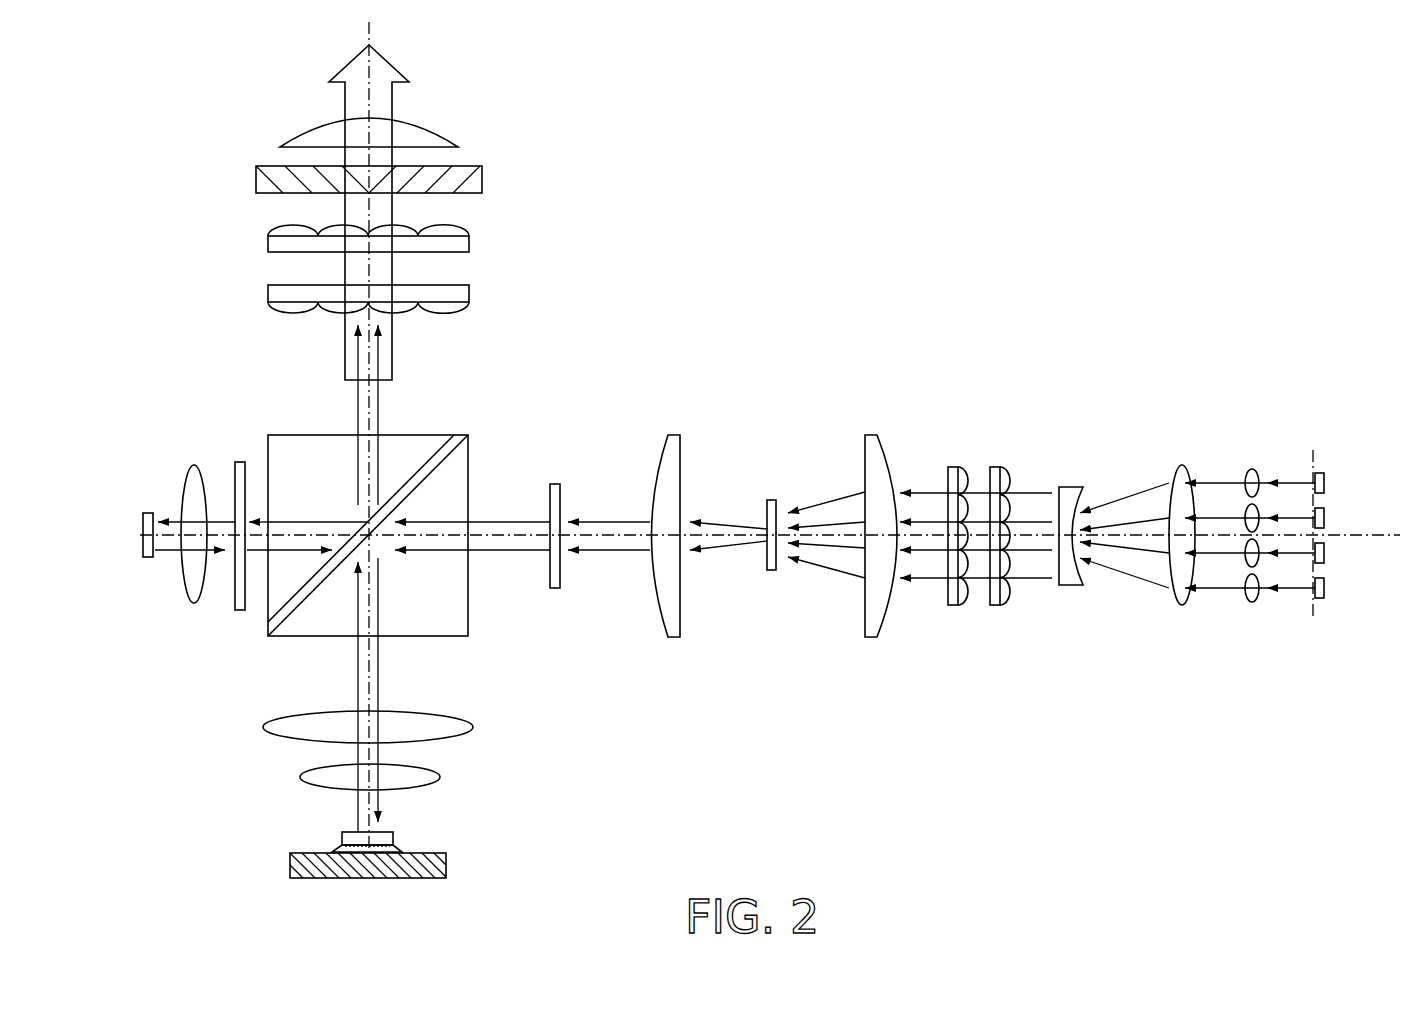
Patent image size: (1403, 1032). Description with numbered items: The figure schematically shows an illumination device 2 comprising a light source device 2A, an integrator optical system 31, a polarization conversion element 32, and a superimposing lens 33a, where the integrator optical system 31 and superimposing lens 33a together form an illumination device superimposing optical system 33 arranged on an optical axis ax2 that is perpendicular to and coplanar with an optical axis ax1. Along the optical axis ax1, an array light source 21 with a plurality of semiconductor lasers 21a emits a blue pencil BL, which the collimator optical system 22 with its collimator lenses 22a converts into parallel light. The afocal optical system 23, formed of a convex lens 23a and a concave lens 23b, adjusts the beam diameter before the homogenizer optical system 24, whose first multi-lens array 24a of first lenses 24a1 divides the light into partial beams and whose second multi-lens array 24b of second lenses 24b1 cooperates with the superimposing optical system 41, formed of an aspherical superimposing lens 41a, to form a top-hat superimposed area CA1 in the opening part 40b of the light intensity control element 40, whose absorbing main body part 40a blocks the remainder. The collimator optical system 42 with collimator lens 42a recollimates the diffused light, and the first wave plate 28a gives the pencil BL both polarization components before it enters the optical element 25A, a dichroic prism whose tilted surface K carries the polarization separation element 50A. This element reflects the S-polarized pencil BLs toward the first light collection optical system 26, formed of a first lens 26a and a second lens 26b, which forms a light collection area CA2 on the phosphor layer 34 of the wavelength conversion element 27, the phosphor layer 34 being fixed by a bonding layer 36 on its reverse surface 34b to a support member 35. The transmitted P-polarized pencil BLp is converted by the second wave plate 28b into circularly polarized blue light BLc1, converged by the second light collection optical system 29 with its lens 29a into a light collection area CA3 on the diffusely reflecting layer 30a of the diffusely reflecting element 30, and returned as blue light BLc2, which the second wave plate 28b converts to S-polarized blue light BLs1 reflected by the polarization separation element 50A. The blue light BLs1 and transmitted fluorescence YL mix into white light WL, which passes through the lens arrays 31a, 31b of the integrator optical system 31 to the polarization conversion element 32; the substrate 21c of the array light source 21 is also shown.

The illumination device 2 is at (923, 190).
The light source device 2A is at (527, 405).
The array light source 21 is at (1353, 539).
The semiconductor laser 21a is at (1325, 478).
The substrate 21c is at (1316, 615).
The collimator optical system 22 is at (1257, 480).
The collimator lens for laser 22a is at (1248, 468).
The afocal optical system 23 is at (1127, 472).
The convex lens 23a is at (1170, 493).
The concave lens 23b is at (1073, 477).
The homogenizer optical system 24 is at (994, 518).
The first multi-lens array 24a is at (1024, 539).
The first lens 24a1 is at (1012, 565).
The second multi-lens array 24b is at (958, 539).
The second lens 24b1 is at (970, 565).
The optical element 25A is at (404, 545).
The first light collection optical system 26 is at (444, 751).
The first lens 26a is at (473, 720).
The second lens 26b is at (440, 772).
The wavelength conversion element 27 is at (355, 853).
The first wave plate 28a is at (555, 484).
The second wave plate 28b is at (240, 460).
The second light collection optical system 29 is at (179, 542).
The lens 29a is at (186, 600).
The diffusely reflecting element 30 is at (135, 479).
The diffusely reflecting layer 30a is at (148, 512).
The integrator optical system 31 is at (435, 269).
The lens array 31a is at (470, 293).
The lens array 31b is at (470, 243).
The polarization conversion element 32 is at (483, 180).
The illumination device superimposing optical system 33 is at (438, 131).
The superimposing lens 33a is at (458, 142).
The phosphor layer 34 is at (394, 853).
The reverse surface 34b is at (372, 850).
The support member 35 is at (290, 868).
The bonding layer 36 is at (400, 849).
The light intensity control element 40 is at (764, 542).
The main body part 40a is at (773, 572).
The opening part 40b is at (767, 552).
The superimposing optical system 41 is at (881, 530).
The superimposing lens 41a is at (890, 610).
The collimator optical system 42 is at (666, 528).
The collimator lens 42a is at (656, 615).
The polarization separation element 50A is at (452, 439).
The tilted surface K is at (430, 470).
The white illumination light WL is at (343, 95).
The fluorescence YL is at (357, 480).
The pencil BL is at (476, 612).
The pencil BLs is at (380, 686).
The blue light BLs1 is at (380, 456).
The pencil BLp is at (310, 520).
The blue light BLc1 is at (221, 520).
The blue light BLc2 is at (221, 553).
The superimposed area CA1 is at (797, 556).
The light collection area CA2 is at (347, 822).
The light collection area CA3 is at (157, 565).
The optical axis ax1 is at (1346, 538).
The optical axis ax2 is at (372, 28).